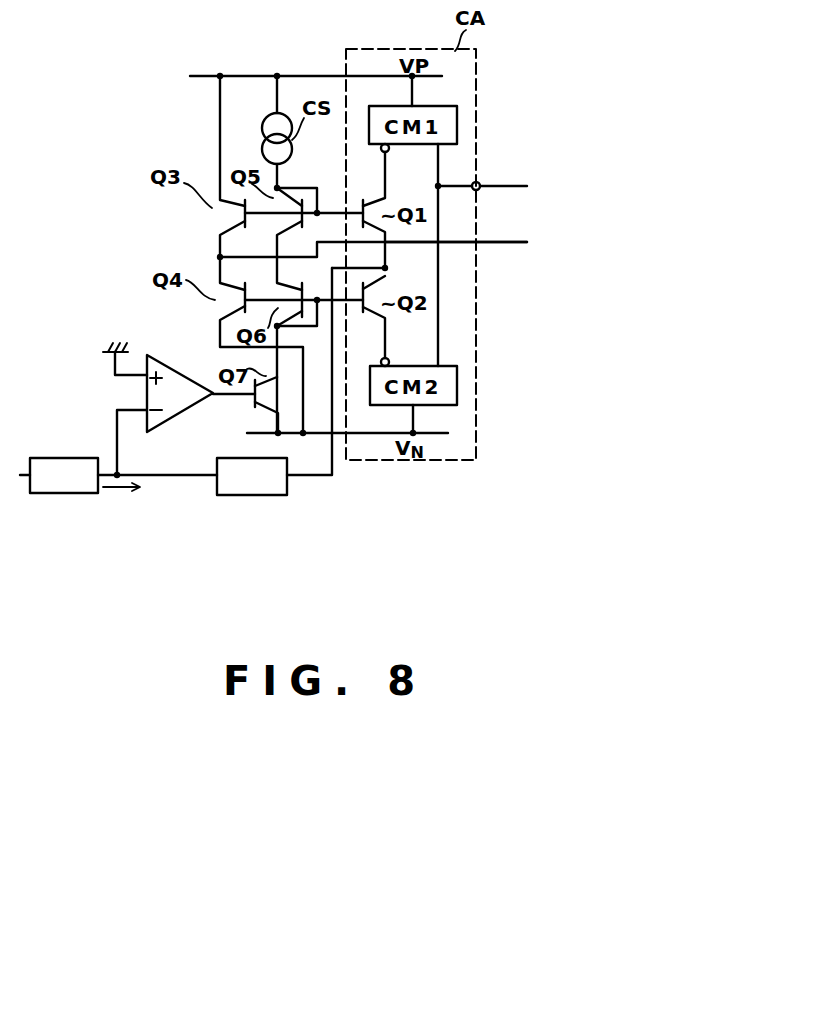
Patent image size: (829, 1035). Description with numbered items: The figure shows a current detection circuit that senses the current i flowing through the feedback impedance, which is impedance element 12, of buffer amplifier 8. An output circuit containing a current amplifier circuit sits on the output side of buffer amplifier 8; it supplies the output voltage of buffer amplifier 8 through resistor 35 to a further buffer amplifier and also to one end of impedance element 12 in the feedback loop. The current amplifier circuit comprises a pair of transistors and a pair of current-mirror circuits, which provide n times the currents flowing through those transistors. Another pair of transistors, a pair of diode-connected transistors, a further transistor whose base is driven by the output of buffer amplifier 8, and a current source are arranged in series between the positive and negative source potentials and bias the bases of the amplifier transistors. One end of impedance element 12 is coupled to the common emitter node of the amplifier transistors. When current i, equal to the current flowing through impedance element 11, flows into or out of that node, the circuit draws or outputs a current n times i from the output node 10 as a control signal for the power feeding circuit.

The buffer amplifier 8 is at (185, 377).
The output terminal TO 10 is at (492, 198).
The impedance element 11 is at (68, 458).
The impedance element 12 is at (260, 457).
The resistor 35 is at (551, 245).